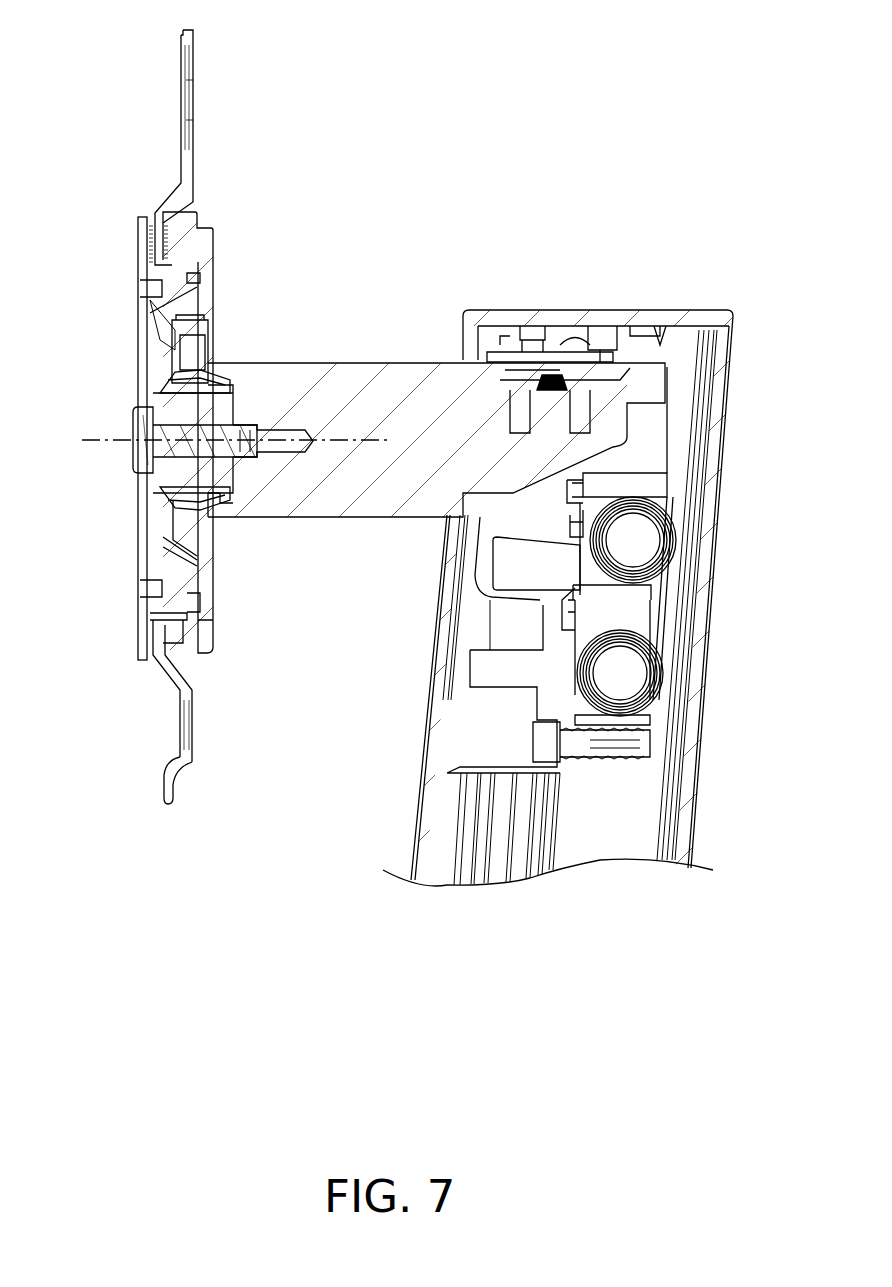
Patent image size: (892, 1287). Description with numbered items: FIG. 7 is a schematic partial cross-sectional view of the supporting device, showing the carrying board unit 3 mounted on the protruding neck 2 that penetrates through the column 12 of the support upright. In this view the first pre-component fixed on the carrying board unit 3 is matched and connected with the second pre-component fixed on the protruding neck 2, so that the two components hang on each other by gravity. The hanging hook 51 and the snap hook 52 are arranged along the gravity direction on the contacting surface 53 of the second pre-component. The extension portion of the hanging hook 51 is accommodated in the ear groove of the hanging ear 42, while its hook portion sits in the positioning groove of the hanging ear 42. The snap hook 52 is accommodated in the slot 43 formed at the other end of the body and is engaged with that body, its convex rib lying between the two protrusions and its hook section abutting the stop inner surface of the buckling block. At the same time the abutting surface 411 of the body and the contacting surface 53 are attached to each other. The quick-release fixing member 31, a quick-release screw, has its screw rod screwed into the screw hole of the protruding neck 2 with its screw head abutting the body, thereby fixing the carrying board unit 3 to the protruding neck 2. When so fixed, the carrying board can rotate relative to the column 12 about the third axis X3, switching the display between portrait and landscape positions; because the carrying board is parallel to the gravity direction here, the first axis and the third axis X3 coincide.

The protruding neck 2 is at (418, 390).
The carrying board unit 3 is at (150, 170).
The column 12 is at (702, 615).
The quick-release fixing member 31 is at (150, 447).
The hanging ear 42 is at (215, 402).
The slot 43 is at (198, 490).
The hanging hook 51 is at (220, 383).
The snap hook 52 is at (220, 503).
The abutting surface 411 is at (263, 458).
The contacting surface 53 is at (245, 441).
The third axis X3 is at (217, 442).